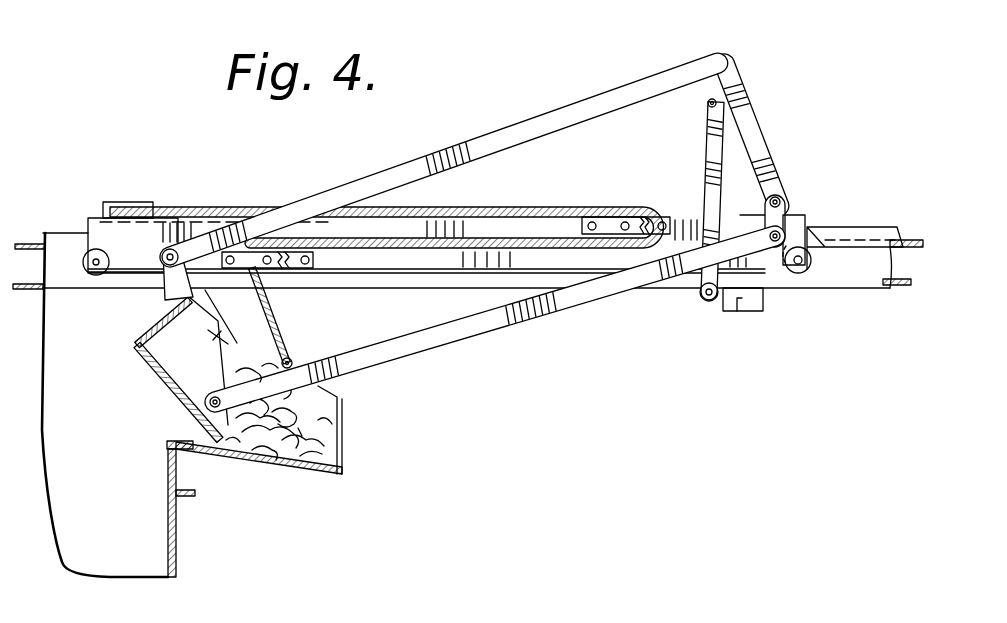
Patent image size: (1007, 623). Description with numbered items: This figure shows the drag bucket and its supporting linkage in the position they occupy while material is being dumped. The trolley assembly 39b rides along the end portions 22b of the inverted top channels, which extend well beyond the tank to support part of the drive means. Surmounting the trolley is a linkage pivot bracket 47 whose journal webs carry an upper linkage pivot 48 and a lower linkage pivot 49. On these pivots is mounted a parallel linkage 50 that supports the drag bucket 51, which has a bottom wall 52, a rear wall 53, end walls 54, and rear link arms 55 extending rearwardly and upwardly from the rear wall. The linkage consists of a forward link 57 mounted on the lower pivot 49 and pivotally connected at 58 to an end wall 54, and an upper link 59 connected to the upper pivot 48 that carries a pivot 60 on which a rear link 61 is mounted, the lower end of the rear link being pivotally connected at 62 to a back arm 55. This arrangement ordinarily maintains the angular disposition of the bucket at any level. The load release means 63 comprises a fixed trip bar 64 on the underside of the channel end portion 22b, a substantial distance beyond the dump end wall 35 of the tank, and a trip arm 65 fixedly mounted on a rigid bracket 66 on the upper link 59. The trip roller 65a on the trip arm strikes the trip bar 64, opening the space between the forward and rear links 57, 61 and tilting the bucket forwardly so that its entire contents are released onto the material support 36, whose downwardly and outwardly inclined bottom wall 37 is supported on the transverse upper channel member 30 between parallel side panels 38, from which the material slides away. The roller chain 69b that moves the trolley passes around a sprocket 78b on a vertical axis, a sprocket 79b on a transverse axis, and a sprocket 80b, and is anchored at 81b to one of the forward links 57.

The end portions of the inverted top channels 22b is at (860, 290).
The transverse upper channel member 30 is at (186, 498).
The dump end wall 35 is at (166, 543).
The material support 36 is at (307, 449).
The bottom wall of the material support 37 is at (308, 471).
The side panels 38 is at (343, 414).
The trolley assembly 39b is at (90, 195).
The linkage pivot bracket 47 is at (803, 200).
The upper linkage pivot 48 is at (779, 198).
The lower linkage pivot 49 is at (776, 270).
The parallel linkage 50 is at (495, 319).
The drag bucket 51 is at (164, 389).
The bottom wall 52 is at (158, 366).
The rear wall 53 is at (158, 330).
The end wall 54 is at (228, 344).
The rear link arm 55 is at (162, 298).
The forward link 57 is at (473, 330).
The pivotal connection 58 is at (225, 406).
The upper link 59 is at (760, 126).
The pivot 60 is at (723, 59).
The rear link 61 is at (543, 114).
The pivotal connection 62 is at (161, 256).
The load release means 63 is at (712, 230).
The trip bar 64 is at (733, 313).
The trip arm 65 is at (708, 188).
The trip roller 65a is at (695, 297).
The rigid bracket 66 is at (708, 106).
The roller chain 69b is at (240, 207).
The sprocket 78b is at (140, 202).
The sprocket 79b is at (627, 208).
The sprocket 80b is at (272, 270).
The chain anchorage 81b is at (297, 355).